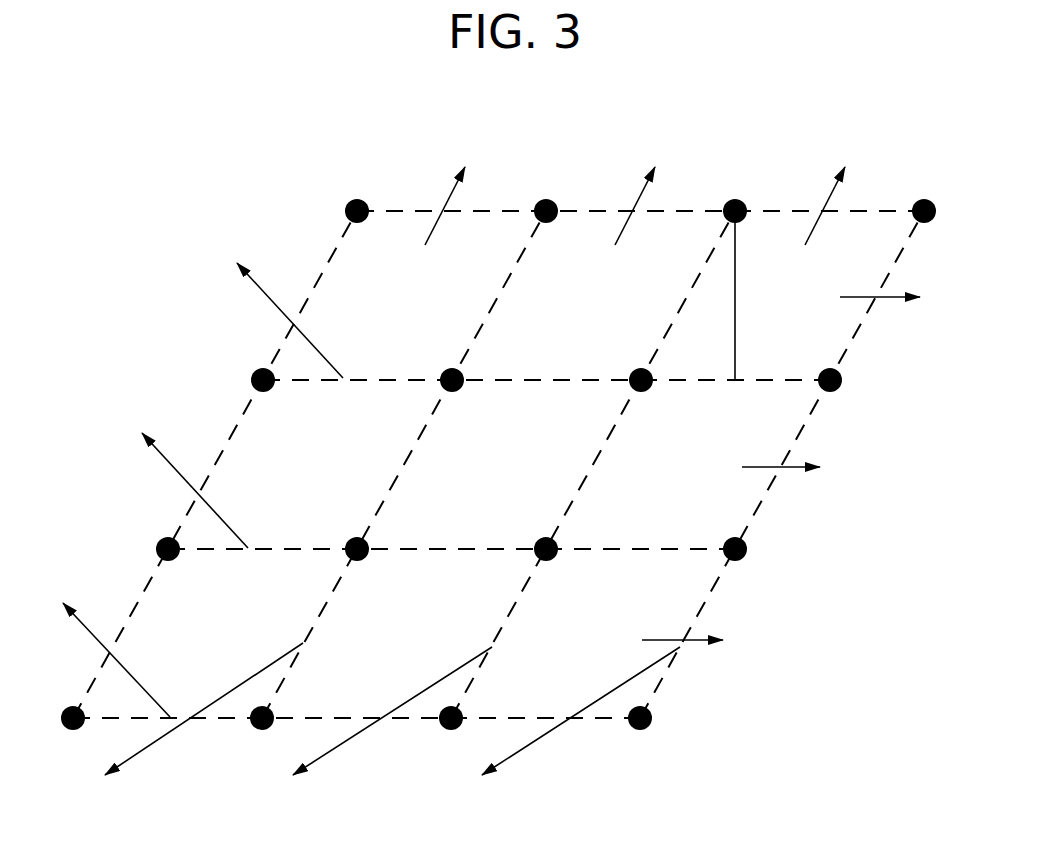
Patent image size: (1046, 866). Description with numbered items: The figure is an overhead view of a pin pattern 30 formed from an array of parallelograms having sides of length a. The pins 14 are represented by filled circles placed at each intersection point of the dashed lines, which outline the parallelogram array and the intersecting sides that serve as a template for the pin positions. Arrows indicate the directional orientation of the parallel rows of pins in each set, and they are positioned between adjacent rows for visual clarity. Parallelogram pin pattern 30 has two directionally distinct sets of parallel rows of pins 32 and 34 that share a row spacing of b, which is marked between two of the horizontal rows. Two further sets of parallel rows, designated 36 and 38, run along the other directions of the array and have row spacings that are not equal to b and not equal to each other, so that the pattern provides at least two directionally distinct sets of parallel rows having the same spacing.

The pin pattern 30 is at (357, 145).
The pin 14 is at (641, 742).
The set of parallel rows of pins 32 is at (883, 303).
The set of parallel rows of pins 34 is at (453, 200).
The set of parallel rows of pins 36 is at (148, 742).
The set of parallel rows of pins 38 is at (267, 292).